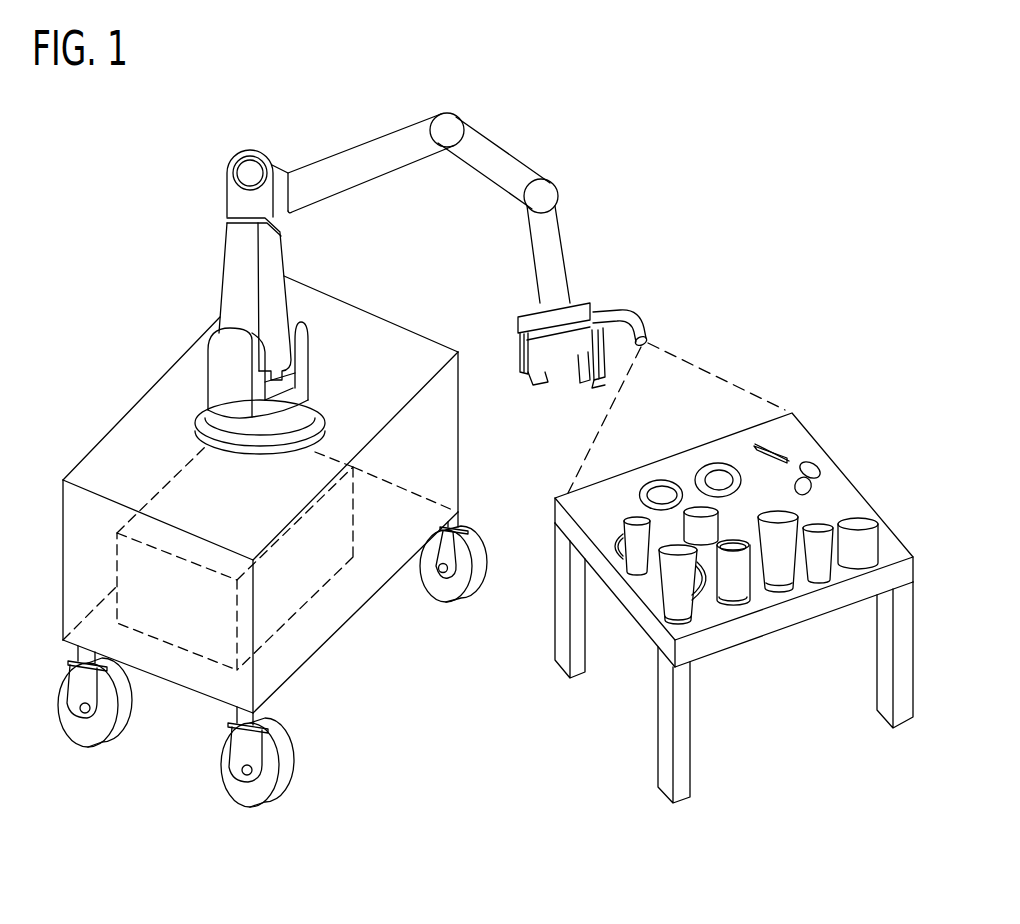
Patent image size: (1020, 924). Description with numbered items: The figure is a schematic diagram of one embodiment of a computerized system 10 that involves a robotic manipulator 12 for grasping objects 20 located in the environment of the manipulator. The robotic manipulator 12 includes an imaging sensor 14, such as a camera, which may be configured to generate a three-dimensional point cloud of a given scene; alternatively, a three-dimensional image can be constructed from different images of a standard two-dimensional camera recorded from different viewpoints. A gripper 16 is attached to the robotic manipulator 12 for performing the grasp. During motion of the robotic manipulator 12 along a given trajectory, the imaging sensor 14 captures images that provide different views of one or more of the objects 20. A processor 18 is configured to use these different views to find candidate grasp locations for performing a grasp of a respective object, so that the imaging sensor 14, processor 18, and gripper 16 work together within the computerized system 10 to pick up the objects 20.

The computerized system 10 is at (409, 460).
The robotic manipulator 12 is at (528, 163).
The imaging sensor 14 is at (637, 313).
The gripper 16 is at (580, 370).
The processor 18 is at (117, 562).
The objects 20 is at (834, 439).